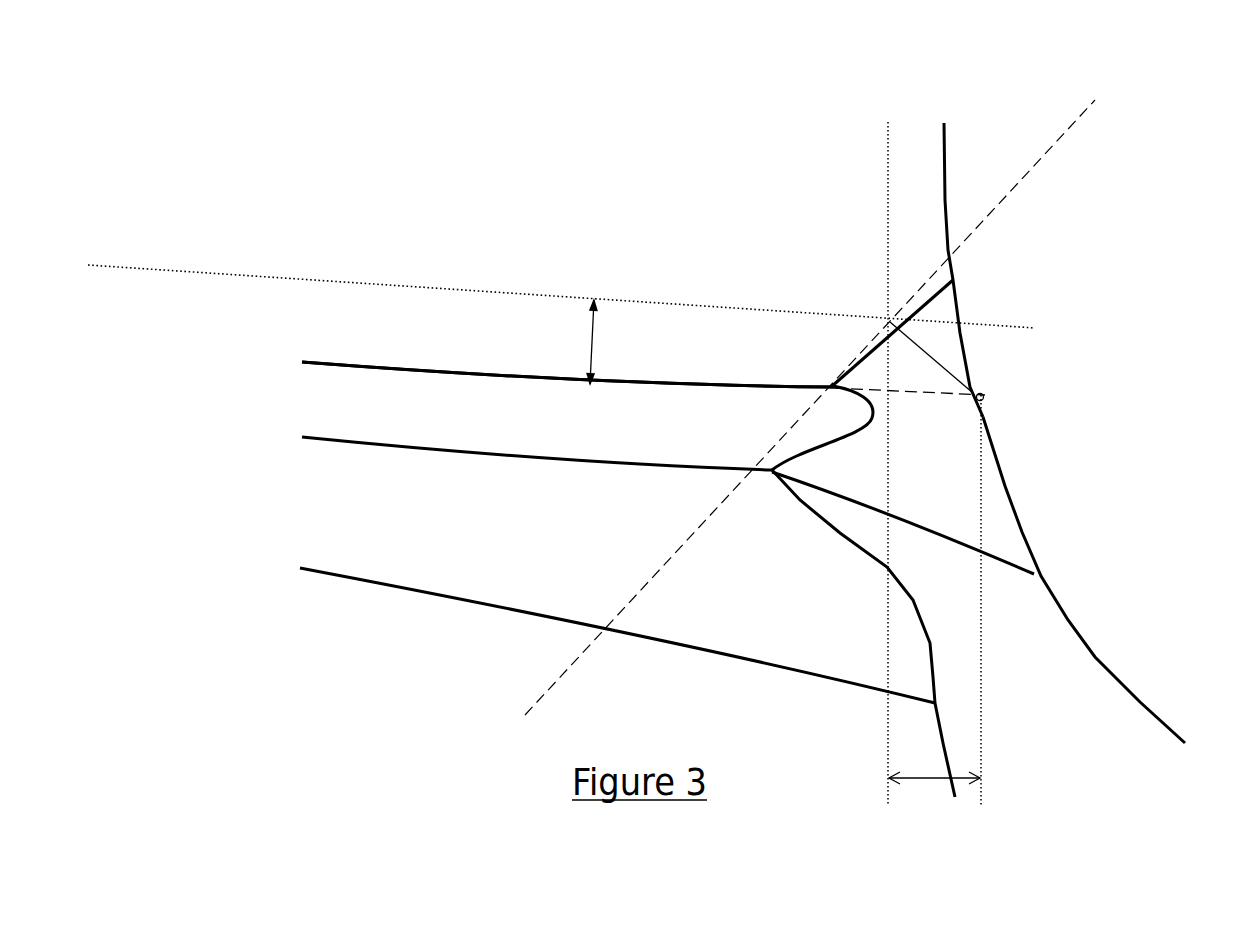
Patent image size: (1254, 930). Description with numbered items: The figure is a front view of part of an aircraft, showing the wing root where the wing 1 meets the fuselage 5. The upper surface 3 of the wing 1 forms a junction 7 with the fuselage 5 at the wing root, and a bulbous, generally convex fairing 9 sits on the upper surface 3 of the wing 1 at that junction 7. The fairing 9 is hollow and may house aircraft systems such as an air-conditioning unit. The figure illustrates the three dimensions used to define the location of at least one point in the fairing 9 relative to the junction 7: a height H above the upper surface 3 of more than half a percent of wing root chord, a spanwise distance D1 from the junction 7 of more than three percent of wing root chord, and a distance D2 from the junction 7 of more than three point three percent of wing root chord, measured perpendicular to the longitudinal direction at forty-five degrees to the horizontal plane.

The wing 1 is at (530, 495).
The upper surface 3 is at (388, 347).
The fuselage 5 is at (1083, 566).
The junction 7 is at (995, 387).
The fairing 9 is at (865, 285).
The height H is at (588, 326).
The distance D1 is at (934, 808).
The distance D2 is at (946, 330).